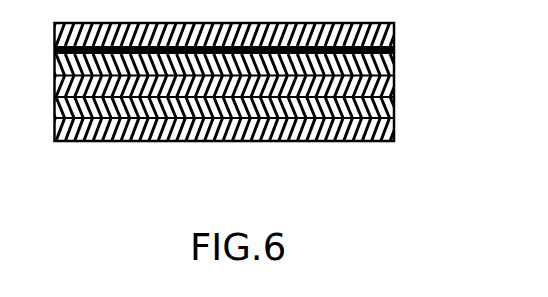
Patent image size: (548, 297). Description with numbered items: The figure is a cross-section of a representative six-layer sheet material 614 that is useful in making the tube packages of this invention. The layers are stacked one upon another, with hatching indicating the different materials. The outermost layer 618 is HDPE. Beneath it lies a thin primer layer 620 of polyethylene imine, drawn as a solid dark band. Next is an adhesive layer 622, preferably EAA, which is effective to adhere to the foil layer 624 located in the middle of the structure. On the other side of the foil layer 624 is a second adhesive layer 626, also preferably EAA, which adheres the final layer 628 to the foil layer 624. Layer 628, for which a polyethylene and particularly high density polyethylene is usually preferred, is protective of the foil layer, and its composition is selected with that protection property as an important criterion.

The sheet material 614 is at (255, 147).
The HDPE layer 618 is at (394, 36).
The primer layer 620 is at (394, 52).
The adhesive layer 622 is at (394, 70).
The foil layer 624 is at (394, 90).
The adhesive layer 626 is at (394, 114).
The protective layer 628 is at (394, 137).